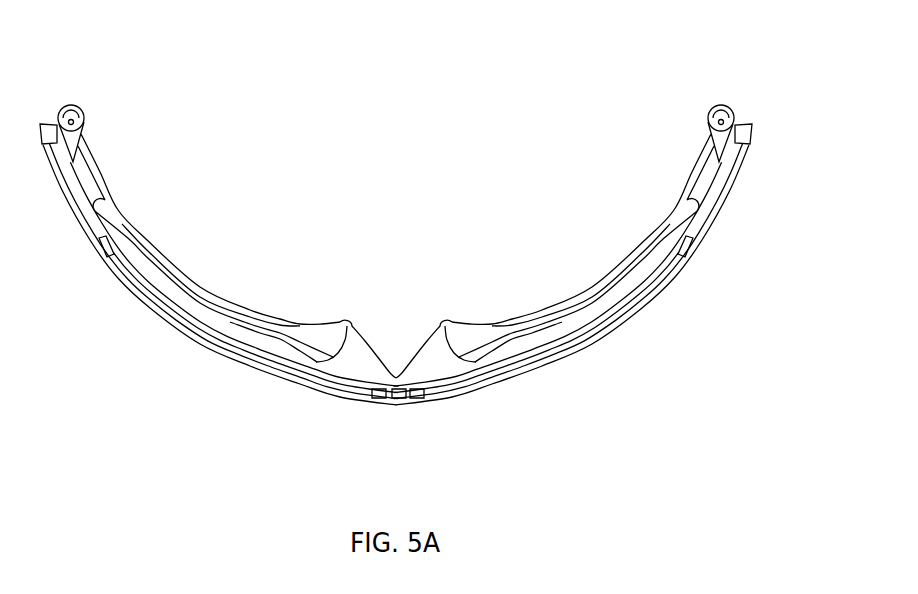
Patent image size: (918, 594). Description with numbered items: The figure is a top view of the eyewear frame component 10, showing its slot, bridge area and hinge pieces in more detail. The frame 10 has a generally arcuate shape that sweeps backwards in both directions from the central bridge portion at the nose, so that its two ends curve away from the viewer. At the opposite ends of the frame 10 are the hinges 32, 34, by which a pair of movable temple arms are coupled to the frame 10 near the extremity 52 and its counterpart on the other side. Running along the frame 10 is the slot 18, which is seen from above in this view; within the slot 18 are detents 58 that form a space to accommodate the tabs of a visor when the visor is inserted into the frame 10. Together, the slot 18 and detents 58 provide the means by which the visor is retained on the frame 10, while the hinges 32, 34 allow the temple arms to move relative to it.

The eyewear frame component 10 is at (410, 253).
The slot 18 is at (441, 396).
The hinge 32 is at (710, 106).
The hinge 34 is at (84, 106).
The extremity of the frame 52 is at (400, 376).
The detent 58 is at (111, 254).